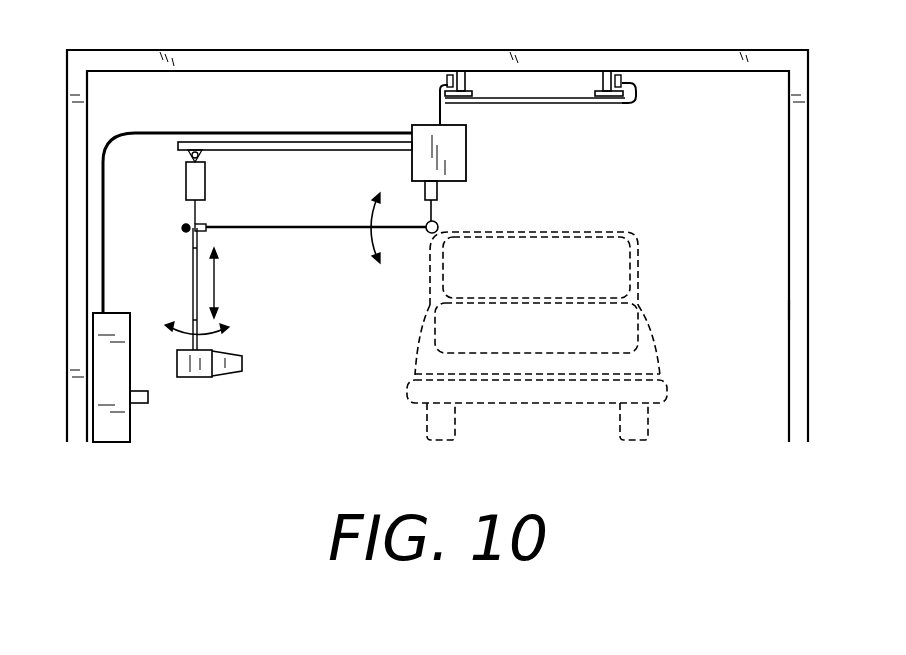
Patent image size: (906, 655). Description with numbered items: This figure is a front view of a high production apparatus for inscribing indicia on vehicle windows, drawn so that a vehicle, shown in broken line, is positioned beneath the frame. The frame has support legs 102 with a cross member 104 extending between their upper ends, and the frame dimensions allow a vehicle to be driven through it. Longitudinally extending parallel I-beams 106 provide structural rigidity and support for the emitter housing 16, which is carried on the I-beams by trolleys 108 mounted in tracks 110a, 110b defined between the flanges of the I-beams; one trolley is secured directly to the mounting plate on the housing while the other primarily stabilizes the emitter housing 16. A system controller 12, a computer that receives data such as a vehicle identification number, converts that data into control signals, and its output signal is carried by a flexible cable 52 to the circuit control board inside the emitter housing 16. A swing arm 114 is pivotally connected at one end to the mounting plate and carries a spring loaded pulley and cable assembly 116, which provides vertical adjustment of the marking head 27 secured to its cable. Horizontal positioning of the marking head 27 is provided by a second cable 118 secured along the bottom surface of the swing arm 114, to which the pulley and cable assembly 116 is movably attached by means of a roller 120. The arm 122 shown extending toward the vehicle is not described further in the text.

The cross member 104 is at (305, 56).
The support leg 102 is at (789, 298).
The flexible cable 52 is at (160, 133).
The swing arm 114 is at (253, 121).
The emitter housing 16 is at (467, 170).
The trolley 108 is at (438, 100).
The track 110a is at (447, 76).
The track 110b is at (623, 78).
The I-beam 106 is at (590, 80).
The second cable 118 is at (187, 153).
The roller 120 is at (186, 180).
The spring loaded pulley and cable assembly 116 is at (205, 186).
The arm 122 is at (300, 232).
The marking head 27 is at (198, 378).
The system controller 12 is at (113, 313).